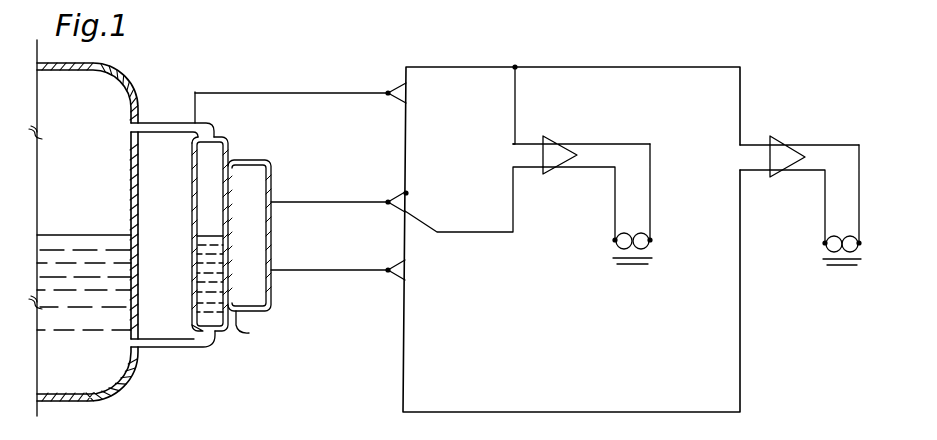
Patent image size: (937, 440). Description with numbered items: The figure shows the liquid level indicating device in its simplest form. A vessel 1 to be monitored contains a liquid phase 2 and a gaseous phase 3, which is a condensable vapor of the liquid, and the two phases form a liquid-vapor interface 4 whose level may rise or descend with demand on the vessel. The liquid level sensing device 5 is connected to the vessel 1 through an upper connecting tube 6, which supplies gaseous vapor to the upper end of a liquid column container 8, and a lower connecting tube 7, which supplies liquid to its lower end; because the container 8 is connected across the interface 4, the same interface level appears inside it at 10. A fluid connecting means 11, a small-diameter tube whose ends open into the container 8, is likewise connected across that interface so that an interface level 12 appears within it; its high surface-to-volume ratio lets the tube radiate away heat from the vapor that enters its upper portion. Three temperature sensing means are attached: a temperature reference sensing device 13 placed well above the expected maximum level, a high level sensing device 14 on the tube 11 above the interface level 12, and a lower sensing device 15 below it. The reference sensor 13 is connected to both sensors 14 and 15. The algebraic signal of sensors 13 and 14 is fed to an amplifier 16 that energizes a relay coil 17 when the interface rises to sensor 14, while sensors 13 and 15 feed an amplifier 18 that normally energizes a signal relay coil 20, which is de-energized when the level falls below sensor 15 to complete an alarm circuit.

The vessel 1 is at (125, 78).
The liquid phase 2 is at (60, 318).
The gaseous phase 3 is at (96, 156).
The liquid-vapor interface 4 is at (128, 235).
The liquid level sensing device 5 is at (222, 131).
The upper connecting tube 6 is at (166, 121).
The lower connecting tube 7 is at (163, 339).
The liquid column container 8 is at (192, 180).
The interface level in liquid column 10 is at (196, 232).
The fluid connecting means 11 is at (259, 329).
The interface level 12 is at (272, 229).
The temperature reference sensing device 13 is at (197, 127).
The high level sensing device 14 is at (272, 201).
The low level temperature sensing device 15 is at (272, 268).
The amplifier 16 is at (547, 169).
The relay coil 17 is at (613, 242).
The amplifier 18 is at (775, 171).
The signal relay coil 20 is at (823, 245).